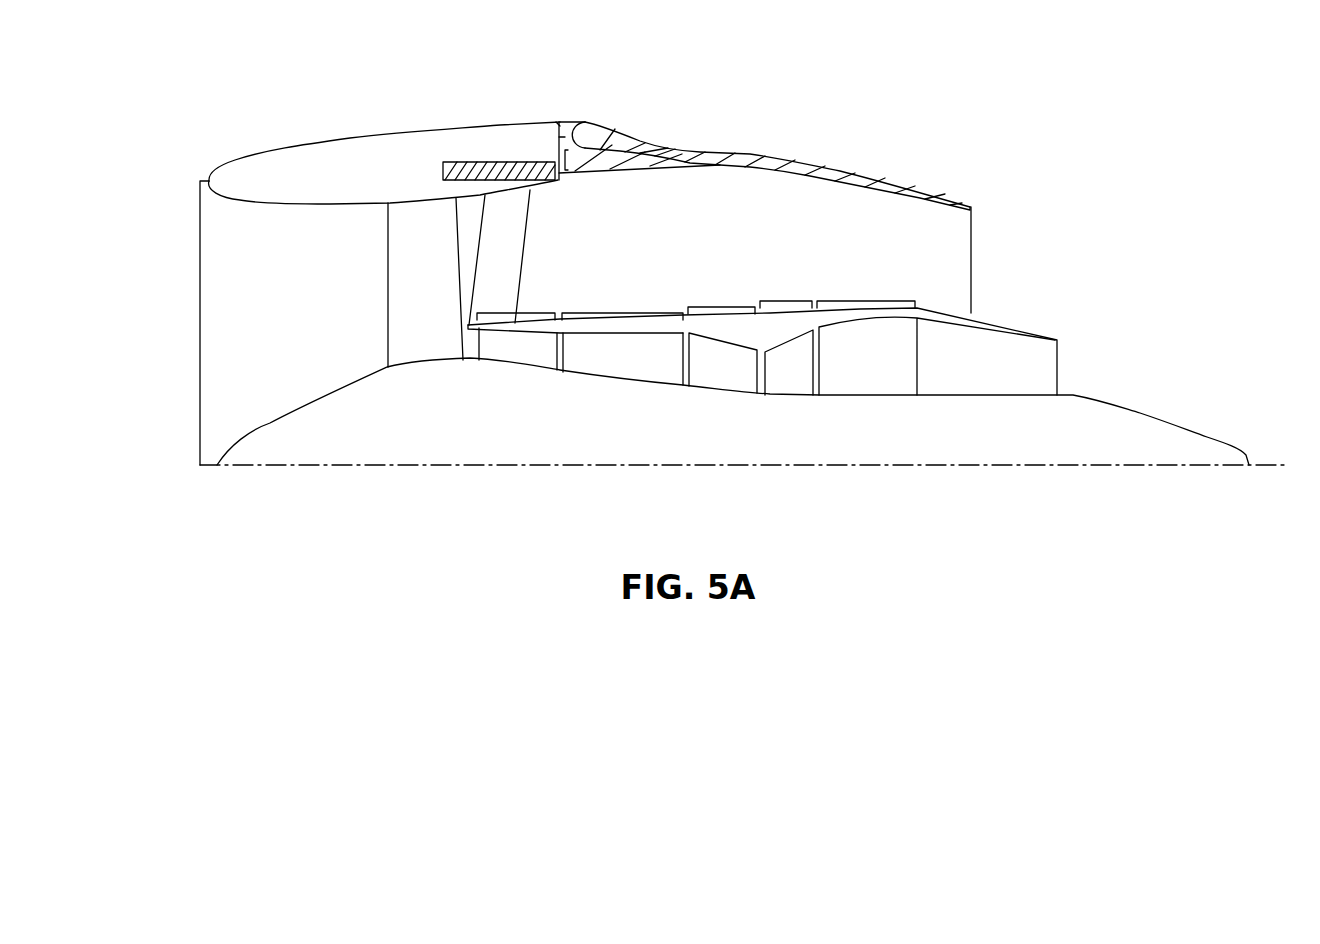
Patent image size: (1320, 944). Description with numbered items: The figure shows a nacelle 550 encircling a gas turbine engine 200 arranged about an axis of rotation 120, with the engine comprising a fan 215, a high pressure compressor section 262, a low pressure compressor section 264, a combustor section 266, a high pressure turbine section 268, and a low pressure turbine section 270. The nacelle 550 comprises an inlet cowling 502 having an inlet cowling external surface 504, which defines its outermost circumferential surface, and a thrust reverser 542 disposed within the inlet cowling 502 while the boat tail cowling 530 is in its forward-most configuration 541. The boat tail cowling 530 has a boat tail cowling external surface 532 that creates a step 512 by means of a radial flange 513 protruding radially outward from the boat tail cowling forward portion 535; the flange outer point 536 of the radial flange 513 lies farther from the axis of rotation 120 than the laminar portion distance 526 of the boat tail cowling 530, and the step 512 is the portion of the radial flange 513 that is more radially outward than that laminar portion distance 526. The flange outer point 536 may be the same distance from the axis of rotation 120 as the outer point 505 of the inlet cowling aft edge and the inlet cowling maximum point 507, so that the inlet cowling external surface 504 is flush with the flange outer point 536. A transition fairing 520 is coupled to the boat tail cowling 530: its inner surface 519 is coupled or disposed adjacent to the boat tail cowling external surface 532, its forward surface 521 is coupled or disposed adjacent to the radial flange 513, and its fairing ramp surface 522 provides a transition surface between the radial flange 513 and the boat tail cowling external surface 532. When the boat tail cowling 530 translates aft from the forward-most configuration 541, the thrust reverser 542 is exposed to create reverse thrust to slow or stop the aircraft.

The axis of rotation 120 is at (187, 467).
The gas turbine engine 200 is at (172, 345).
The fan 215 is at (398, 283).
The high pressure compressor section 262 is at (528, 312).
The low pressure compressor section 264 is at (622, 313).
The combustor 266 is at (722, 307).
The high pressure turbine section 268 is at (784, 301).
The low pressure turbine section 270 is at (858, 301).
The inlet cowling 502 is at (284, 150).
The inlet cowling external surface 504 is at (365, 136).
The outer point 505 is at (559, 122).
The inlet cowling maximum point 507 is at (557, 122).
The step 512 is at (583, 128).
The radial flange 513 is at (575, 122).
The inner surface 519 is at (668, 166).
The transition fairing 520 is at (620, 158).
The forward surface 521 is at (565, 137).
The fairing ramp surface 522 is at (650, 158).
The laminar portion distance 526 is at (560, 181).
The boat tail cowling 530 is at (727, 150).
The boat tail cowling external surface 532 is at (829, 165).
The boat tail cowling forward portion 535 is at (592, 172).
The flange outer point 536 is at (566, 122).
The forward-most configuration 541 is at (703, 72).
The thrust reverser 542 is at (453, 161).
The nacelle 550 is at (186, 159).